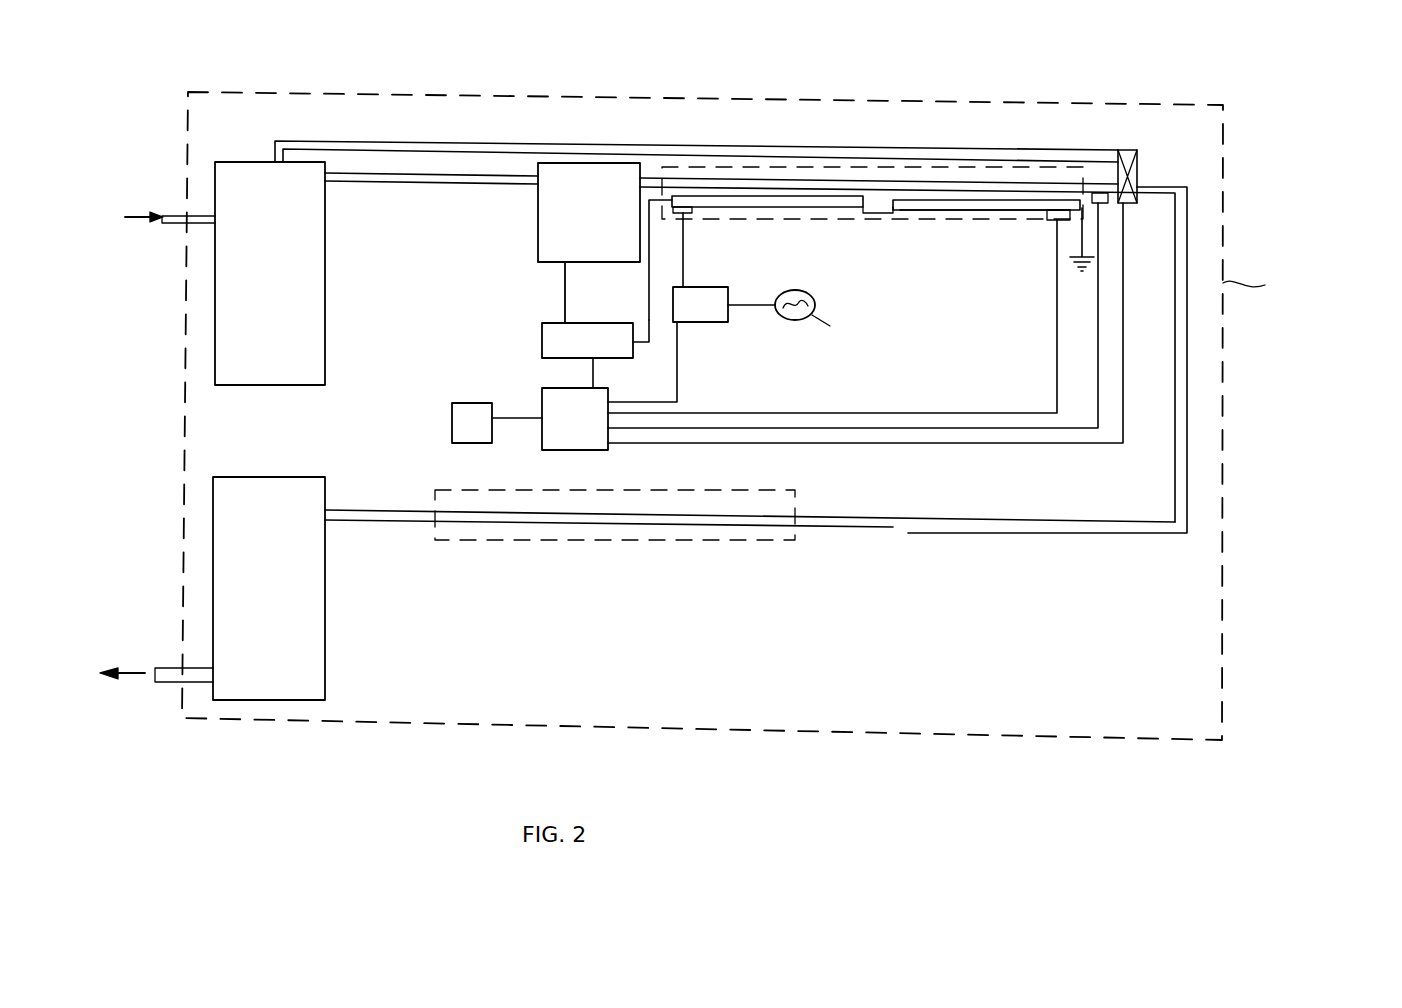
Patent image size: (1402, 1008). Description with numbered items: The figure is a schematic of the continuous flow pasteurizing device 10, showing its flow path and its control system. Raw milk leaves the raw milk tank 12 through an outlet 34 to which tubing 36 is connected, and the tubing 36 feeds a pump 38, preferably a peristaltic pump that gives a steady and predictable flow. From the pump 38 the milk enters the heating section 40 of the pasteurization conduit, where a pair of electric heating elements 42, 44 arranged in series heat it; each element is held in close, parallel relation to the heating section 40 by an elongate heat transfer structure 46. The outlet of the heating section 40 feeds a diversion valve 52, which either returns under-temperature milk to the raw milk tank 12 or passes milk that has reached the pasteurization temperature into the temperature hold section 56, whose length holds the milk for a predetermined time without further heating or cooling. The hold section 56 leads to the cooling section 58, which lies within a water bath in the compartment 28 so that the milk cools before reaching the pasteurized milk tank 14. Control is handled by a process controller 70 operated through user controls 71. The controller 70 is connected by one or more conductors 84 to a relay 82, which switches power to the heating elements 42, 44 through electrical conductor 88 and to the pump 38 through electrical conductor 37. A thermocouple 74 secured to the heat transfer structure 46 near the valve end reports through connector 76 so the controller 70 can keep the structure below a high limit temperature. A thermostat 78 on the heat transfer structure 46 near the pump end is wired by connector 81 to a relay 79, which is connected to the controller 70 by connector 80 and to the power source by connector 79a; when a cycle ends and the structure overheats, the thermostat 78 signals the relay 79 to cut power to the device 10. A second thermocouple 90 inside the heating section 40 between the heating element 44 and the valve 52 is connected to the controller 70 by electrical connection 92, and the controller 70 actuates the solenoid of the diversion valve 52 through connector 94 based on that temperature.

The pasteurizing device 10 is at (1262, 219).
The raw milk tank 12 is at (325, 345).
The pasteurized milk tank 14 is at (325, 598).
The compartment 28 is at (655, 540).
The outlet 34 is at (330, 185).
The tubing 36 is at (420, 187).
The electrical conductor 37 is at (565, 292).
The pump 38 is at (538, 242).
The heating section 40 is at (858, 178).
The heating element 42 is at (742, 207).
The heating element 44 is at (1002, 210).
The heat transfer structure 46 is at (957, 210).
The diversion valve 52 is at (1137, 150).
The temperature hold section 56 is at (1062, 533).
The cooling section 58 is at (537, 520).
The process controller 70 is at (542, 418).
The user controls 71 is at (452, 412).
The thermocouple 74 is at (1043, 222).
The connector 76 is at (997, 413).
The thermostat 78 is at (683, 225).
The relay 79 is at (723, 322).
The connector 79a is at (775, 297).
The connector 80 is at (677, 402).
The connector 81 is at (666, 268).
The relay 82 is at (595, 327).
The conductor 84 is at (593, 378).
The electrical conductor 88 is at (649, 336).
The second thermocouple 90 is at (1103, 205).
The electrical connection 92 is at (1097, 392).
The connector 94 is at (1057, 448).